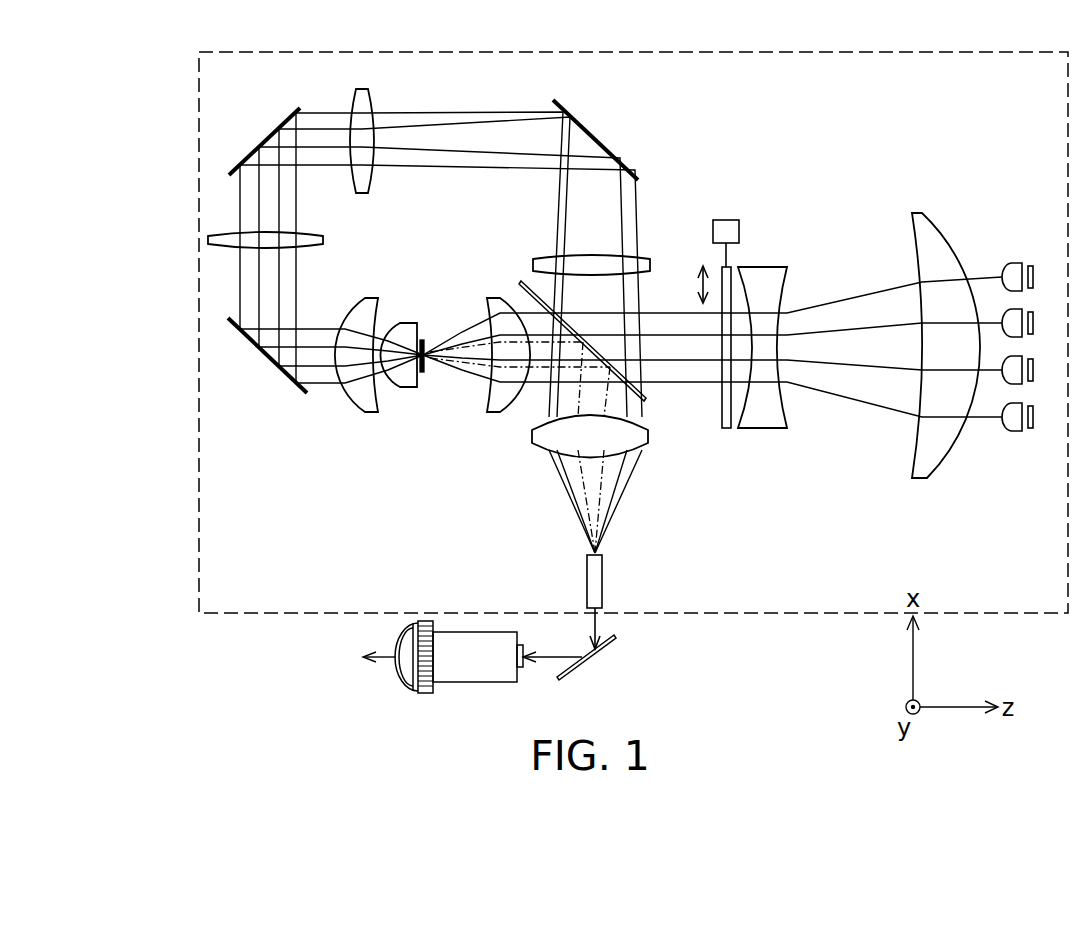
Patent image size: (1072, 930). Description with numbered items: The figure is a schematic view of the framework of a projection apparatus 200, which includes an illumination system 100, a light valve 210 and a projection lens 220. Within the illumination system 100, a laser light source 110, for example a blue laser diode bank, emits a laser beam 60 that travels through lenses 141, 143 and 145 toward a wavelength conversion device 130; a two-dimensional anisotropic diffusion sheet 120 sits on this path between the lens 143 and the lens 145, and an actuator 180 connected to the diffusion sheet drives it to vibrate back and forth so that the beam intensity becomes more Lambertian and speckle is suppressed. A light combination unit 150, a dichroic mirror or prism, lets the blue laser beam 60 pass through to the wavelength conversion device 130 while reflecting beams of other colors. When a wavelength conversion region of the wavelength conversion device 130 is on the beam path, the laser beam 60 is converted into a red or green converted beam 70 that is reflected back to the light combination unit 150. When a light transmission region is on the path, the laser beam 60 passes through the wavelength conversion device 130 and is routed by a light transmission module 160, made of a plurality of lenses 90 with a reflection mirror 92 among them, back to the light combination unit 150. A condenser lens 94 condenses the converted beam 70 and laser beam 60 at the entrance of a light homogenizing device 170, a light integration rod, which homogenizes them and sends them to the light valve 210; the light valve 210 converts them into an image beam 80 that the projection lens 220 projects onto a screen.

The laser beam 60 is at (477, 114).
The converted beam 70 is at (465, 386).
The image beam 80 is at (382, 660).
The lenses 90 is at (362, 92).
The reflection mirror 92 is at (256, 155).
The condenser lens 94 is at (650, 437).
The illumination system 100 is at (848, 52).
The laser light source 110 is at (1036, 320).
The two-dimensional anisotropic diffusion sheet 120 is at (727, 430).
The wavelength conversion device 130 is at (421, 373).
The lens 141 is at (915, 468).
The lens 143 is at (770, 430).
The lens 145 is at (492, 412).
The light combination unit 150 is at (520, 283).
The light transmission module 160 is at (639, 60).
The light homogenizing device 170 is at (598, 582).
The actuator 180 is at (727, 220).
The projection apparatus 200 is at (966, 806).
The light valve 210 is at (592, 672).
The projection lens 220 is at (478, 665).